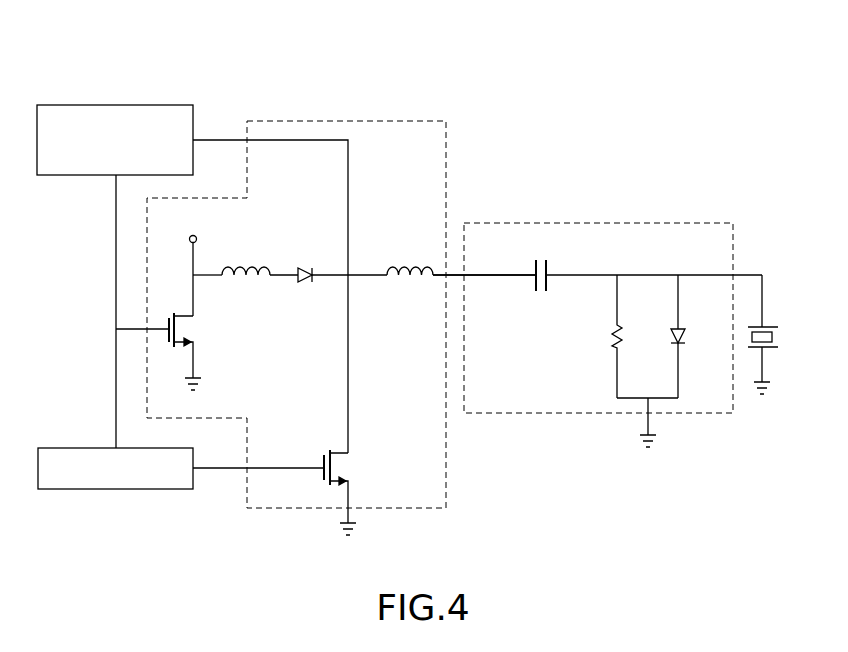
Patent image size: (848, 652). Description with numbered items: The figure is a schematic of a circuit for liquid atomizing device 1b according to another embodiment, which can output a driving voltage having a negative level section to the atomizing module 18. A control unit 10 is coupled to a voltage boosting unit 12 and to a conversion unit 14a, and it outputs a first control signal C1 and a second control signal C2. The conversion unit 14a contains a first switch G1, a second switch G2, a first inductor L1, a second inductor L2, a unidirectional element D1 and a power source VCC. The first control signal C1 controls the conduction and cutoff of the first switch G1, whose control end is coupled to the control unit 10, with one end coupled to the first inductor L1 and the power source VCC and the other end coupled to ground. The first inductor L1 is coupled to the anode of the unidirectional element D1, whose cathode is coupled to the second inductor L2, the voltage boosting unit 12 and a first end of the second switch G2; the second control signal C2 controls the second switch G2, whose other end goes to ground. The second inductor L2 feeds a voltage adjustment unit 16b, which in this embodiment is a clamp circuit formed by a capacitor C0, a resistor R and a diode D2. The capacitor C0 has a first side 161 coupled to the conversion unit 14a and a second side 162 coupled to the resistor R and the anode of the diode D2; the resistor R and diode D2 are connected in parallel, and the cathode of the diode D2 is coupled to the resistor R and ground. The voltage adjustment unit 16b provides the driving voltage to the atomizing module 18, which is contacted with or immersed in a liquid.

The circuit for liquid atomizing device 1b is at (675, 96).
The control unit 10 is at (114, 490).
The voltage boosting unit 12 is at (114, 104).
The conversion unit 14a is at (346, 120).
The voltage adjustment unit 16b is at (646, 223).
The first side 161 is at (495, 278).
The second side 162 is at (580, 278).
The atomizing module 18 is at (770, 322).
The first control signal C1 is at (99, 311).
The second control signal C2 is at (214, 460).
The first switch G1 is at (185, 347).
The second switch G2 is at (302, 487).
The first inductor L1 is at (231, 257).
The second inductor L2 is at (461, 257).
The unidirectional element D1 is at (328, 260).
The diode D2 is at (692, 336).
The capacitor C0 is at (541, 263).
The resistor R is at (626, 336).
The power source VCC is at (192, 264).